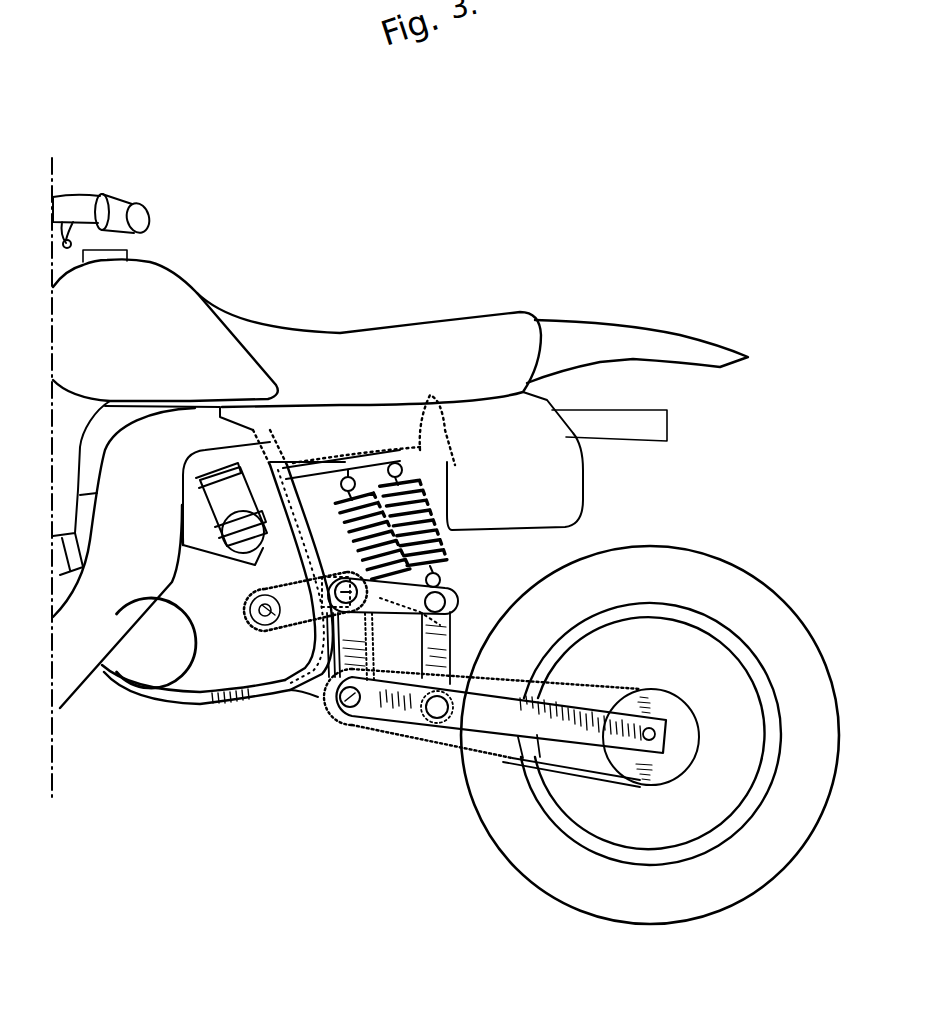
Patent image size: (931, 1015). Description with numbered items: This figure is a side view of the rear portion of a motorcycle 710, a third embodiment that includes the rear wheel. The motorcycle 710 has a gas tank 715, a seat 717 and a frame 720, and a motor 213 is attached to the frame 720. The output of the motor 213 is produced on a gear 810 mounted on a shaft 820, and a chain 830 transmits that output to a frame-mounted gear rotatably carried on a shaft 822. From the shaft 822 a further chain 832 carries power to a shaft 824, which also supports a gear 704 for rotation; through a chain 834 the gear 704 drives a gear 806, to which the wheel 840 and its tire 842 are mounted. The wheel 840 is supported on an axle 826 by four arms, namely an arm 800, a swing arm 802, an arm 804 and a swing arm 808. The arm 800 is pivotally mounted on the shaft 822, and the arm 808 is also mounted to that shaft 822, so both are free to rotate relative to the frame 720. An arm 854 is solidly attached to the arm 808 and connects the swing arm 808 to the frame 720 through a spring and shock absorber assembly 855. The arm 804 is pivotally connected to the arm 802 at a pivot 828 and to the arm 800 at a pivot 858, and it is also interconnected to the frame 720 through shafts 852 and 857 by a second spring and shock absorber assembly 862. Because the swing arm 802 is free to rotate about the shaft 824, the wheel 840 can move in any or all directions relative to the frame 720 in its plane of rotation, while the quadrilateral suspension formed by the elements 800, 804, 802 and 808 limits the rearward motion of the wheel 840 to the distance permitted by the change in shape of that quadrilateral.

The motorcycle 710 is at (244, 273).
The gas tank 715 is at (150, 280).
The seat 717 is at (405, 330).
The shaft 852 is at (423, 448).
The spring and shock absorber assembly 862 is at (420, 492).
The shaft 857 is at (443, 576).
The pivot connection 858 is at (453, 600).
The arm 800 is at (449, 608).
The arm 804 is at (447, 640).
The arm 854 is at (378, 612).
The shaft 822 is at (380, 640).
The spring and shock absorber assembly 855 is at (350, 538).
The motor 213 is at (170, 673).
The shaft 820 is at (292, 627).
The frame 720 is at (181, 694).
The gear 810 is at (247, 604).
The chain 830 is at (259, 591).
The tire 842 is at (670, 589).
The wheel 840 is at (618, 615).
The gear 806 is at (680, 727).
The axle 826 is at (657, 736).
The swing arm 802 is at (507, 720).
The gear 704 is at (322, 700).
The shaft 824 is at (345, 718).
The pivot connection 828 is at (410, 722).
The chain 834 is at (451, 752).
The swing arm 808 is at (270, 685).
The chain 832 is at (318, 697).